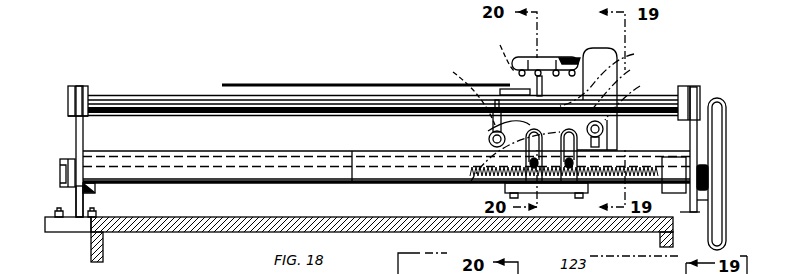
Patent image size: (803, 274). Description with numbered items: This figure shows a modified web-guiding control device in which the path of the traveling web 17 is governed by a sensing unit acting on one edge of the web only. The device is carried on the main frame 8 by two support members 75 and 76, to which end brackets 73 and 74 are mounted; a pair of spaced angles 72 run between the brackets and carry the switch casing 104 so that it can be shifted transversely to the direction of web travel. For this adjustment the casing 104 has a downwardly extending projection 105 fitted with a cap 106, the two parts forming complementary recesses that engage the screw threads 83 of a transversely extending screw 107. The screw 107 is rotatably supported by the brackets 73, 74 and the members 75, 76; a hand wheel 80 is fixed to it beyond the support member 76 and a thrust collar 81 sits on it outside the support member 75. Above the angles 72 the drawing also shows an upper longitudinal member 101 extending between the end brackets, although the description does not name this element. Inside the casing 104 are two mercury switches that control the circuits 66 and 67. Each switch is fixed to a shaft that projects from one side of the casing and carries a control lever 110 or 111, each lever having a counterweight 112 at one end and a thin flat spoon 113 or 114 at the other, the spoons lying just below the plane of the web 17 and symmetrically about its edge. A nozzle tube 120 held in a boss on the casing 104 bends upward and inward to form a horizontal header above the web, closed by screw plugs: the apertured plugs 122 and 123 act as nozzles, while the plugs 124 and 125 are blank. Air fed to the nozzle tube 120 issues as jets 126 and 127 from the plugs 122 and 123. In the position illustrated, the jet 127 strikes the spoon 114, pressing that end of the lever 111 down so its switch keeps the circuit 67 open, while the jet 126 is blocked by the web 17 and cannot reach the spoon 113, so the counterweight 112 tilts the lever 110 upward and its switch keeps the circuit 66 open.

The main frame 8 is at (165, 232).
The traveling web 17 is at (318, 84).
The circuit 66 is at (528, 200).
The circuit 67 is at (572, 200).
The angles 72 is at (212, 176).
The end bracket 73 is at (78, 132).
The end bracket 74 is at (697, 138).
The support member 75 is at (74, 201).
The support member 76 is at (704, 200).
The hand wheel 80 is at (718, 100).
The thrust collar 81 is at (60, 161).
The screw threads 83 is at (496, 184).
The upper rail 101 is at (152, 102).
The switch casing 104 is at (493, 140).
The downwardly extending projection 105 is at (464, 181).
The cap 106 is at (552, 200).
The screw 107 is at (352, 182).
The control lever 110 is at (460, 91).
The control lever 111 is at (636, 98).
The counterweight 112 is at (489, 137).
The spoon 113 is at (500, 91).
The spoon 114 is at (623, 86).
The nozzle tube 120 is at (612, 60).
The plug 122 is at (540, 57).
The plug 123 is at (556, 58).
The plug 124 is at (528, 58).
The plug 125 is at (580, 60).
The jet 126 is at (493, 54).
The jet 127 is at (612, 74).